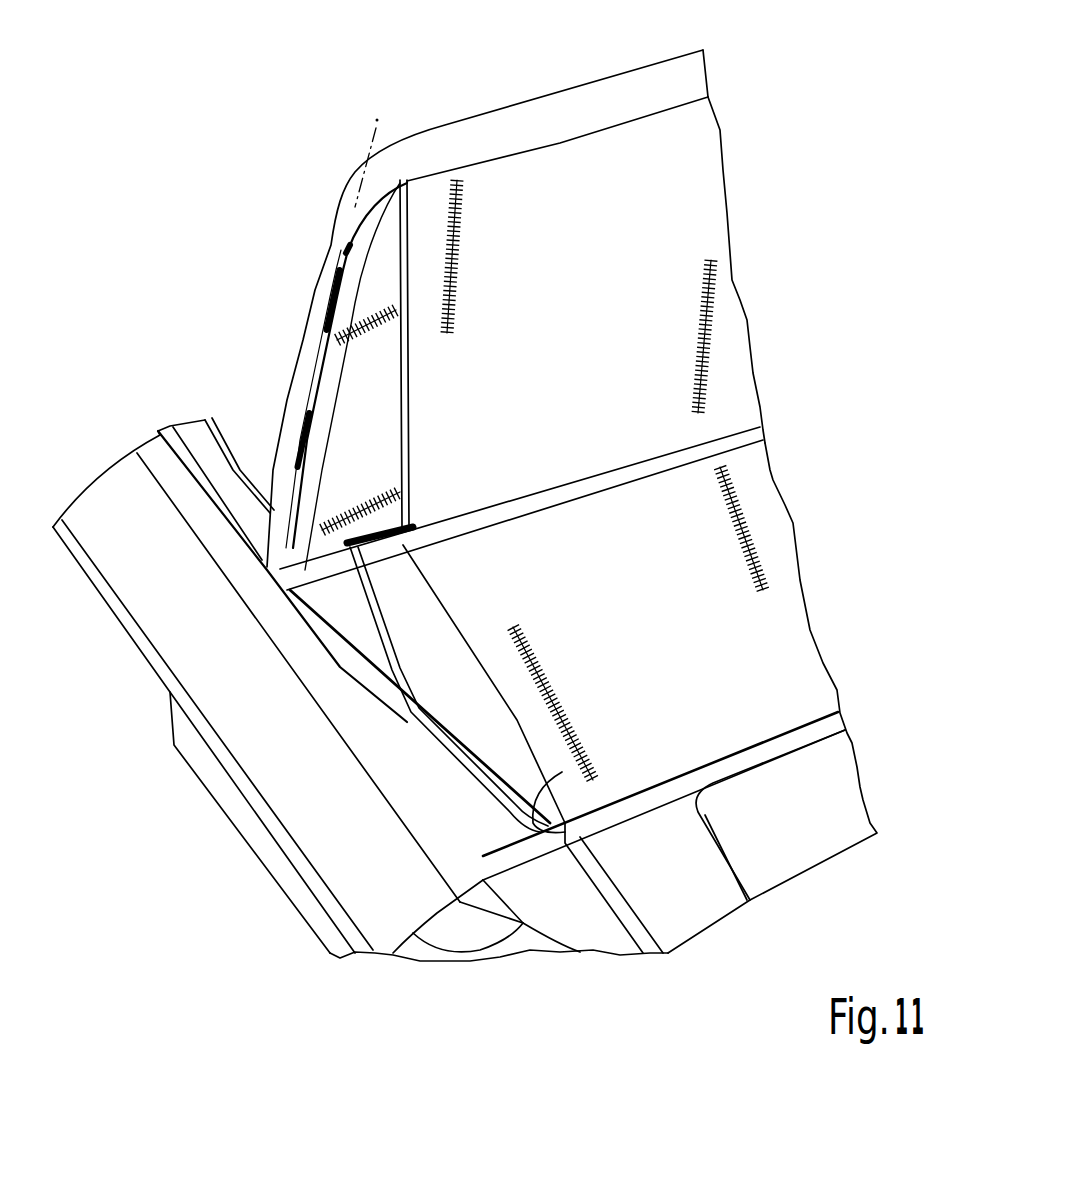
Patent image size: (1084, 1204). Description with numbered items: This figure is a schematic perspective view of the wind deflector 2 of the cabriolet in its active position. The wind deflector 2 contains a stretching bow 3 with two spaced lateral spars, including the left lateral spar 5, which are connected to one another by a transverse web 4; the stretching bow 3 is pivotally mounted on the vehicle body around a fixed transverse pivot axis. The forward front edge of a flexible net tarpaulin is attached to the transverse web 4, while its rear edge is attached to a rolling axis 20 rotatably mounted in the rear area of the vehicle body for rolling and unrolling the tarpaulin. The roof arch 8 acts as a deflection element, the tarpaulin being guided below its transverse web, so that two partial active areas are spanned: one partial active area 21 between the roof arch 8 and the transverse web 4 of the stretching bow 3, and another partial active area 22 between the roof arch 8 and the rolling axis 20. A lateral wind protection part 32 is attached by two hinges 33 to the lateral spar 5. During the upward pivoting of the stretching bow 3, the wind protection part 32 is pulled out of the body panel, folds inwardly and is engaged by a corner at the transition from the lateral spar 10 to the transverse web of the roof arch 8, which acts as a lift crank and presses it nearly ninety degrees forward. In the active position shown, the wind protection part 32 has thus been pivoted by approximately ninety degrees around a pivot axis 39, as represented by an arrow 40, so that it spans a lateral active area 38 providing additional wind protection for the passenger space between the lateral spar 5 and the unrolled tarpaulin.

The wind deflector 2 is at (291, 152).
The stretching bow 3 is at (498, 103).
The transverse web 4 is at (572, 119).
The left lateral spar 5 is at (326, 250).
The roof arch 8 is at (528, 512).
The lateral spar 10 is at (395, 658).
The rolling axis 20 is at (688, 770).
The partial active area 21 is at (698, 212).
The partial active area 22 is at (773, 543).
The lateral wind protection part 32 is at (409, 397).
The hinges 33 is at (312, 313).
The lateral active area 38 is at (380, 297).
The pivot axis 39 is at (280, 609).
The arrow 40 is at (340, 596).